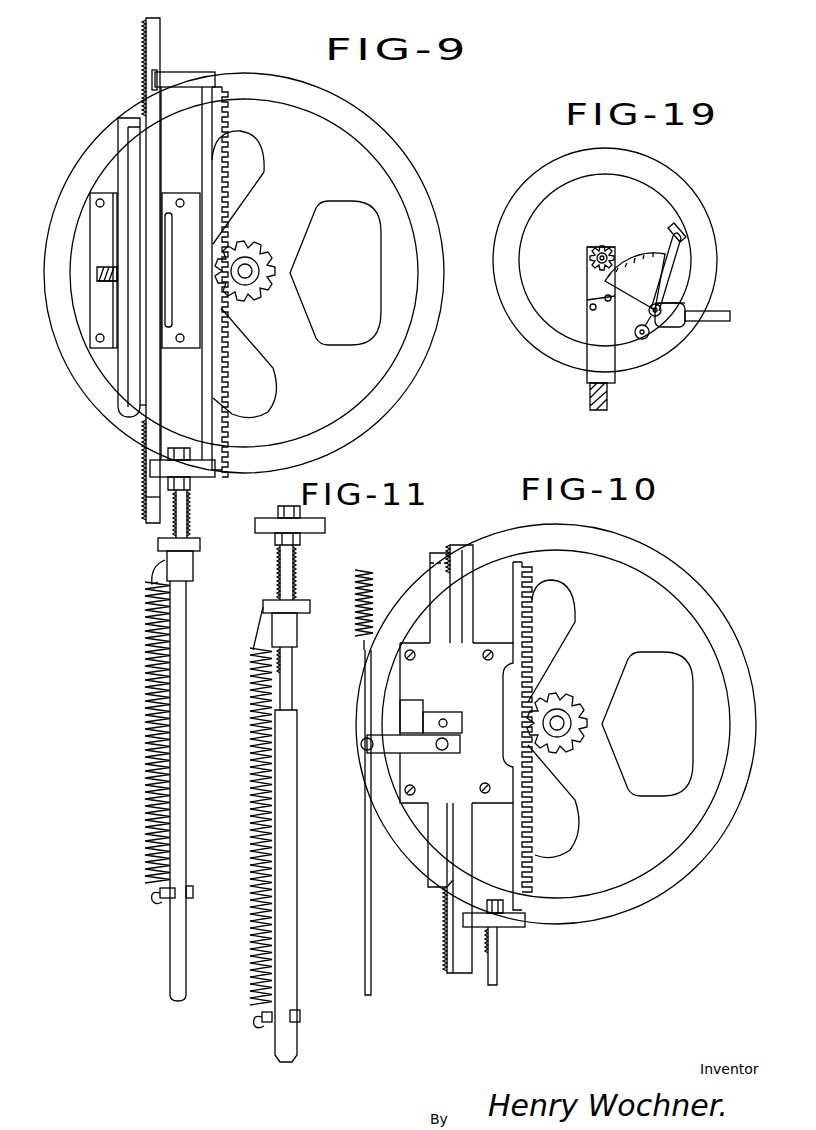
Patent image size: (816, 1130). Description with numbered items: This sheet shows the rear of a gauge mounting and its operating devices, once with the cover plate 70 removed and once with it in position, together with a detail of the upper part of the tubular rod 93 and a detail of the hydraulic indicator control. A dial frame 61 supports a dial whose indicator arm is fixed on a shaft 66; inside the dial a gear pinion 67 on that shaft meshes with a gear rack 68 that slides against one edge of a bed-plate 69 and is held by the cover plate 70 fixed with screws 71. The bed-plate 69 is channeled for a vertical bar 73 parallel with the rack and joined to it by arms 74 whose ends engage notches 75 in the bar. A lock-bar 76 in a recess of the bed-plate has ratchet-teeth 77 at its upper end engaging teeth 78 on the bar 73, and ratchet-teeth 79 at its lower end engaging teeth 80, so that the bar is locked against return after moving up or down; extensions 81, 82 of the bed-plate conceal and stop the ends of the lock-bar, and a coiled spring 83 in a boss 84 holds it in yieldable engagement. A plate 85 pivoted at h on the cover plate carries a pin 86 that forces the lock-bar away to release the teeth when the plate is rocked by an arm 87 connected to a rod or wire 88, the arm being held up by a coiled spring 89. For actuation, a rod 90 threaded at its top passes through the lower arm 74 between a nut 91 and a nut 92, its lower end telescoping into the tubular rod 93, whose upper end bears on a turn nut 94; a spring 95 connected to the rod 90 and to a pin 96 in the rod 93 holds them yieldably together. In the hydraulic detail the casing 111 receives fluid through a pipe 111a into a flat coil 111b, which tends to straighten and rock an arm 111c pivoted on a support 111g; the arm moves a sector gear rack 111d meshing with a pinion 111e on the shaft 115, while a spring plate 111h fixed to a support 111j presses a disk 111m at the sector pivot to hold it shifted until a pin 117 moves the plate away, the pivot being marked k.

In FIG. 9, the dial frame 61 is at (378, 185).
In FIG. 10, the dial frame 61 is at (662, 560).
In FIG. 9, the shaft 66 is at (250, 266).
In FIG. 10, the shaft 66 is at (560, 719).
In FIG. 9, the gear pinion 67 is at (276, 272).
In FIG. 10, the gear pinion 67 is at (597, 722).
In FIG. 9, the gear rack 68 is at (224, 150).
In FIG. 10, the gear rack 68 is at (524, 609).
In FIG. 9, the bed-plate 69 is at (100, 217).
In FIG. 10, the cover plate 70 is at (403, 780).
In FIG. 10, the screws 71 is at (480, 788).
In FIG. 9, the vertical bar 73 is at (148, 392).
In FIG. 10, the vertical bar 73 is at (450, 888).
In FIG. 9, the arms 74 is at (197, 470).
In FIG. 11, the arms 74 is at (262, 535).
In FIG. 9, the notches 75 is at (150, 477).
In FIG. 9, the lock-bar 76 is at (120, 368).
In FIG. 9, the ratchet-teeth 77 is at (120, 119).
In FIG. 9, the teeth 78 is at (146, 50).
In FIG. 9, the ratchet-teeth 79 is at (137, 425).
In FIG. 9, the teeth 80 is at (140, 496).
In FIG. 10, the teeth 80 is at (447, 940).
In FIG. 10, the extension 81 is at (435, 583).
In FIG. 10, the extension 82 is at (432, 848).
In FIG. 9, the coiled spring 83 is at (97, 272).
In FIG. 9, the boss 84 is at (97, 288).
In FIG. 10, the boss 84 is at (409, 712).
In FIG. 10, the plate 85 is at (433, 718).
In FIG. 9, the pin 86 is at (113, 332).
In FIG. 10, the pin 86 is at (448, 722).
In FIG. 10, the arm 87 is at (385, 737).
In FIG. 10, the rod or wire 88 is at (365, 912).
In FIG. 10, the coiled spring 89 is at (373, 594).
In FIG. 9, the rod 90 is at (173, 530).
In FIG. 11, the rod 90 is at (280, 575).
In FIG. 10, the rod 90 is at (498, 956).
In FIG. 9, the nut 91 is at (197, 460).
In FIG. 11, the nut 91 is at (302, 512).
In FIG. 10, the nut 91 is at (527, 908).
In FIG. 9, the nut 92 is at (190, 481).
In FIG. 11, the nut 92 is at (300, 540).
In FIG. 9, the tubular rod 93 is at (184, 740).
In FIG. 11, the tubular rod 93 is at (297, 834).
In FIG. 9, the turn nut 94 is at (168, 562).
In FIG. 11, the turn nut 94 is at (297, 628).
In FIG. 9, the spring 95 is at (147, 694).
In FIG. 11, the spring 95 is at (252, 842).
In FIG. 9, the pin 96 is at (162, 896).
In FIG. 10, the pivot h is at (450, 743).
In FIG. 19, the casing 111 is at (671, 176).
In FIG. 19, the pipe 111a is at (597, 372).
In FIG. 19, the flat coil 111b is at (538, 228).
In FIG. 19, the arm 111c is at (690, 278).
In FIG. 19, the sector gear rack 111d is at (645, 254).
In FIG. 19, the pinion 111e is at (595, 258).
In FIG. 19, the support 111g is at (645, 340).
In FIG. 19, the spring plate 111h is at (680, 327).
In FIG. 19, the support 111j is at (590, 279).
In FIG. 19, the disk 111m is at (604, 304).
In FIG. 19, the shaft 115 is at (605, 246).
In FIG. 19, the pin 117 is at (716, 320).
In FIG. 19, the pivot k is at (664, 310).